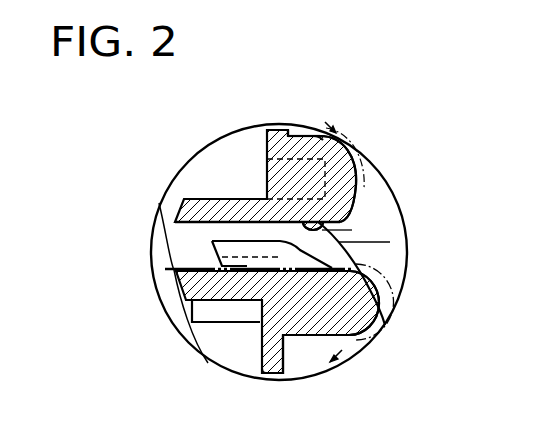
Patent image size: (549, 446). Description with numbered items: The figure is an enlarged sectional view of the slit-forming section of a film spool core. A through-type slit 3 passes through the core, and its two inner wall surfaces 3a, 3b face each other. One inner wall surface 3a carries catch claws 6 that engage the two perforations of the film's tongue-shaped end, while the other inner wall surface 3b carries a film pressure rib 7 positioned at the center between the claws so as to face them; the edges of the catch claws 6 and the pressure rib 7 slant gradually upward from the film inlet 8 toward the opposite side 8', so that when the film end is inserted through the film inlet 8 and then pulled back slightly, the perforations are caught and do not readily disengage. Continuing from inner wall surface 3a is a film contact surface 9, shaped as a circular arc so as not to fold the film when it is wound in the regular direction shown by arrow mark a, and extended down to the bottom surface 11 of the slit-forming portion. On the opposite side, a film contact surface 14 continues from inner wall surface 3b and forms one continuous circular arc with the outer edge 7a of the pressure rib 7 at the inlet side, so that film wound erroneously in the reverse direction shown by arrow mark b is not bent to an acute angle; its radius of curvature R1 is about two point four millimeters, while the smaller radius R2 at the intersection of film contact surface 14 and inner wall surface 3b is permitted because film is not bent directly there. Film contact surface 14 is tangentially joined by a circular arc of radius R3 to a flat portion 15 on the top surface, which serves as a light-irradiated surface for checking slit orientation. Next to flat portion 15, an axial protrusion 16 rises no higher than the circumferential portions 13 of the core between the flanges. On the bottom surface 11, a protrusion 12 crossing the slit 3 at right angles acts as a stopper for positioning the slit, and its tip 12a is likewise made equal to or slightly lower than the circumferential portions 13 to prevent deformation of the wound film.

The circumferential portions 13 is at (250, 126).
The protrusion 16 is at (284, 129).
The flat portion 15 is at (304, 135).
The radius of intersecting point of film contact surface and flat portion R3 is at (317, 134).
The arrow mark b is at (338, 120).
The radius of curvature of film contact surface R1 is at (352, 170).
The film contact surface 14 is at (350, 173).
The inner wall surface 3b is at (332, 207).
The radius of intersecting point of film contact surface and inner surface R2 is at (335, 210).
The film pressure rib 7 is at (288, 238).
The catch claws 6 is at (215, 252).
The outer edge 7a is at (350, 262).
The opposite side 8' is at (232, 256).
The film inlet 8 is at (388, 252).
The slit 3 is at (338, 242).
The film contact surface 9 is at (372, 305).
The bottom surface 11 is at (338, 340).
The arrow mark a is at (326, 358).
The protrusion 12 is at (287, 360).
The tip of protrusion 12a is at (268, 375).
The inner wall surface 3a is at (240, 275).